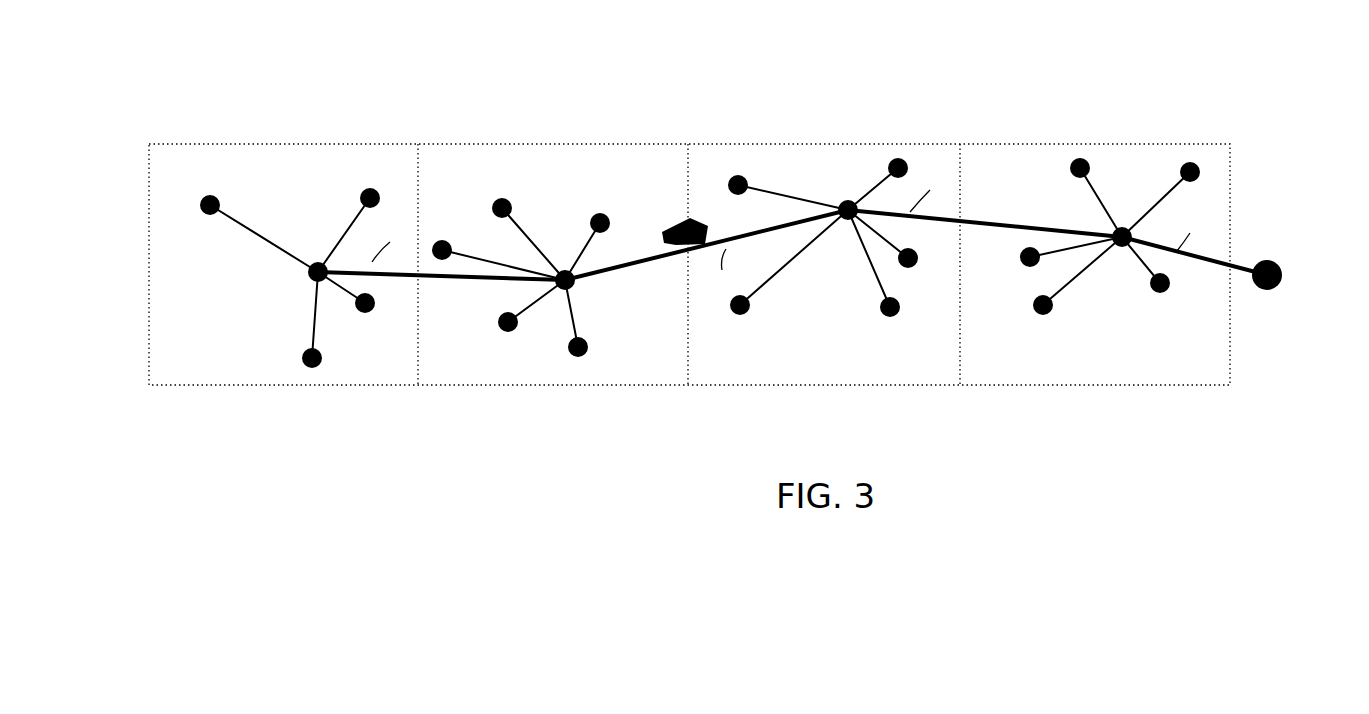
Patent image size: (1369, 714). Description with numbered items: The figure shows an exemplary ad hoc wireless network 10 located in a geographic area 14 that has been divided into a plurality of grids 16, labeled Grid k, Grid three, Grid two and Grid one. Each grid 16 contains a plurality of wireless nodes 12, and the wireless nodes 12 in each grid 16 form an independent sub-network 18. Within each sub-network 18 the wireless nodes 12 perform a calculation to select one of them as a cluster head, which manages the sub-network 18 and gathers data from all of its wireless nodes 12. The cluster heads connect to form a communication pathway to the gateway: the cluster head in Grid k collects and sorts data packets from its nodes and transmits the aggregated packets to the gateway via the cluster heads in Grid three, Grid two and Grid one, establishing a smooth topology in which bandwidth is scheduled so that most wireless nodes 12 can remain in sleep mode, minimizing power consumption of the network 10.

The wireless ad hoc network 10 is at (1179, 90).
The wireless node 12 is at (372, 189).
The geographic area 14 is at (201, 96).
The grid 16 is at (174, 386).
The sub-network 18 is at (1284, 372).